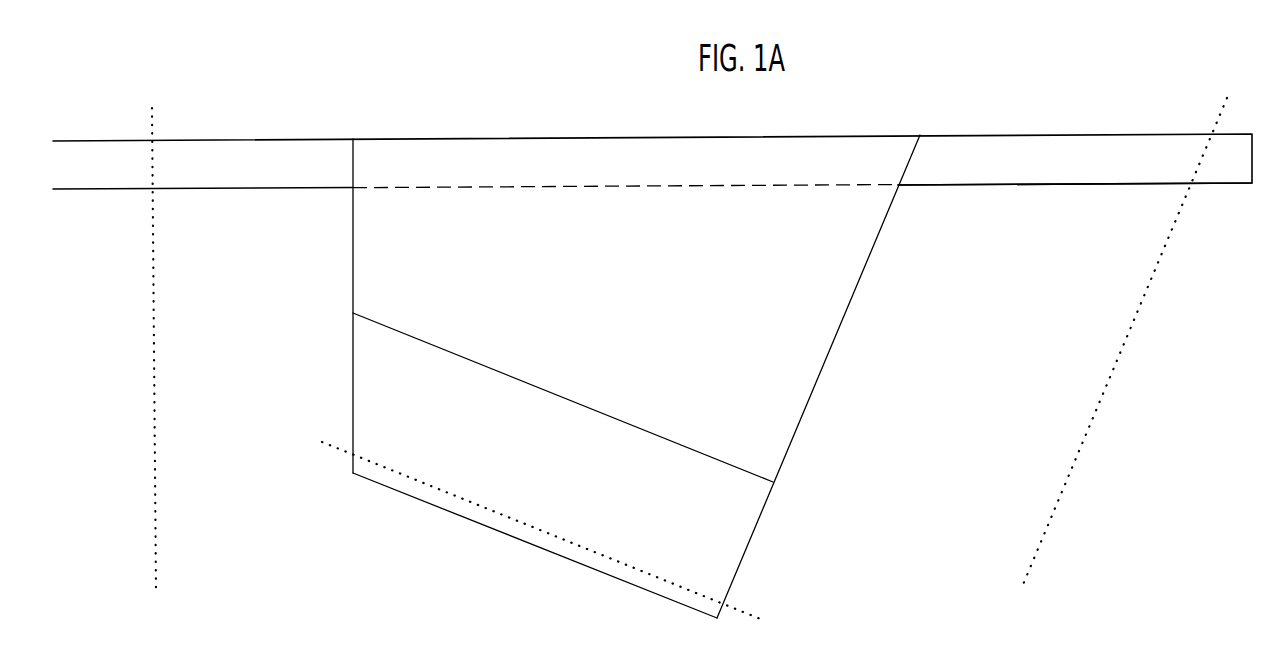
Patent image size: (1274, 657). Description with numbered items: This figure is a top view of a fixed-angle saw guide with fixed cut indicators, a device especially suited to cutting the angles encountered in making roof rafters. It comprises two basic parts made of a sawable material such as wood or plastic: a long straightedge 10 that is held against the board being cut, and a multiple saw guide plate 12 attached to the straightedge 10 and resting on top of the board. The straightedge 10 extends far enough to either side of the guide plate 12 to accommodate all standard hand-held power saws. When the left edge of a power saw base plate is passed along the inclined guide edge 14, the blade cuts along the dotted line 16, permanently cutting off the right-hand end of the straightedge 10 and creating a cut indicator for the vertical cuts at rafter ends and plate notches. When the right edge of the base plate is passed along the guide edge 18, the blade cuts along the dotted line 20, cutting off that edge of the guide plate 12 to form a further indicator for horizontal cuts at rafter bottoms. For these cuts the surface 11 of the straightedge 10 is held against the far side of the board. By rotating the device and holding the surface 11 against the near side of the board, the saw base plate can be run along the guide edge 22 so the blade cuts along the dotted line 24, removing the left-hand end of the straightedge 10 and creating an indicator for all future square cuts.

The straightedge 10 is at (258, 155).
The surface 11 is at (1000, 188).
The multiple saw guide plate 12 is at (583, 223).
The guide edge 14 is at (813, 395).
The dotted line 16 is at (1088, 432).
The guide edge 18 is at (712, 458).
The dotted line 20 is at (693, 590).
The guide edge 22 is at (353, 293).
The dotted line 24 is at (153, 352).